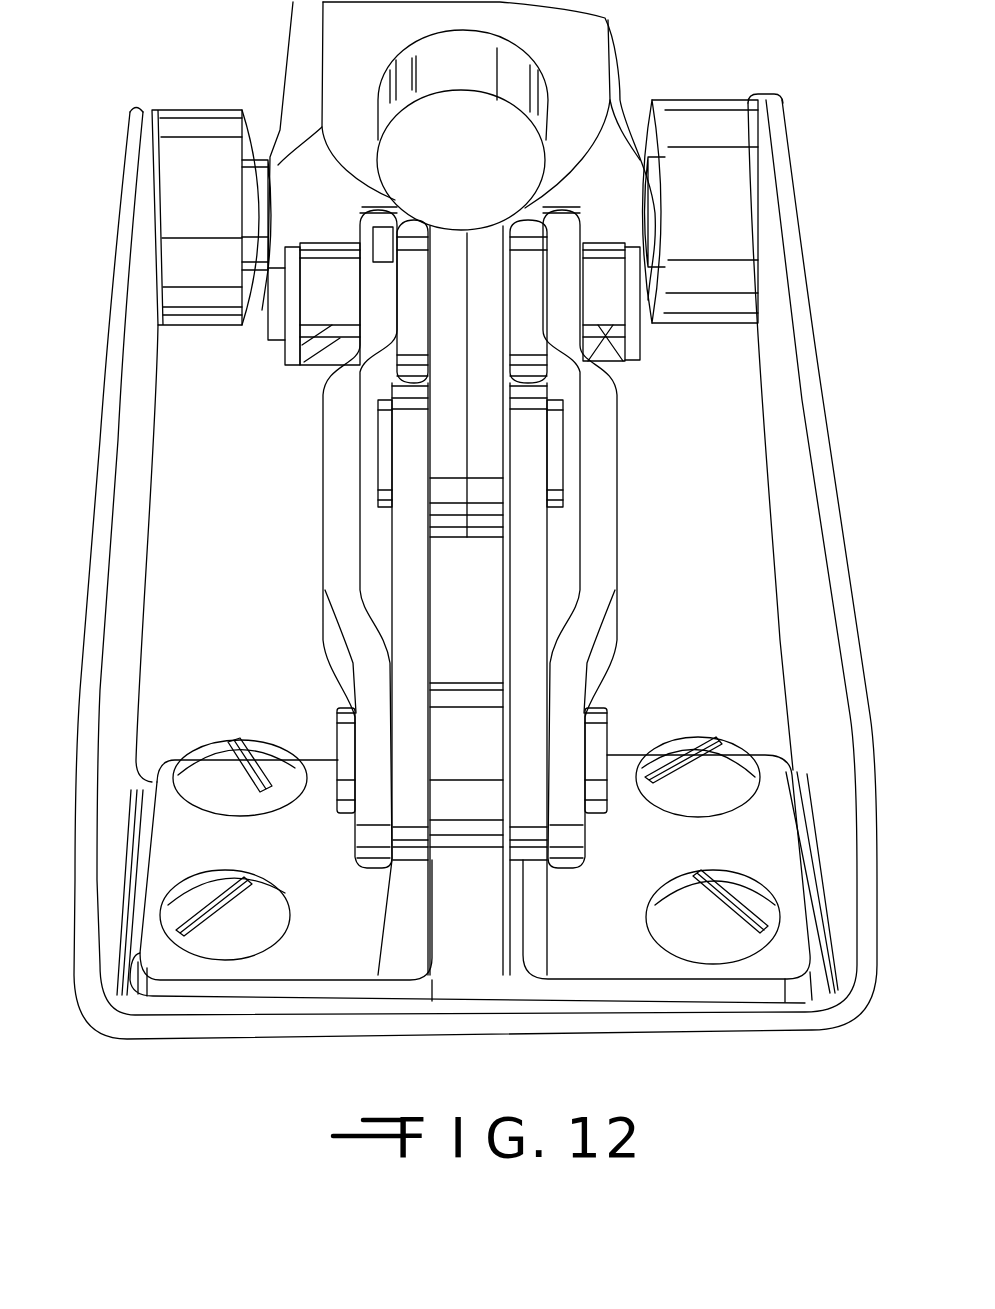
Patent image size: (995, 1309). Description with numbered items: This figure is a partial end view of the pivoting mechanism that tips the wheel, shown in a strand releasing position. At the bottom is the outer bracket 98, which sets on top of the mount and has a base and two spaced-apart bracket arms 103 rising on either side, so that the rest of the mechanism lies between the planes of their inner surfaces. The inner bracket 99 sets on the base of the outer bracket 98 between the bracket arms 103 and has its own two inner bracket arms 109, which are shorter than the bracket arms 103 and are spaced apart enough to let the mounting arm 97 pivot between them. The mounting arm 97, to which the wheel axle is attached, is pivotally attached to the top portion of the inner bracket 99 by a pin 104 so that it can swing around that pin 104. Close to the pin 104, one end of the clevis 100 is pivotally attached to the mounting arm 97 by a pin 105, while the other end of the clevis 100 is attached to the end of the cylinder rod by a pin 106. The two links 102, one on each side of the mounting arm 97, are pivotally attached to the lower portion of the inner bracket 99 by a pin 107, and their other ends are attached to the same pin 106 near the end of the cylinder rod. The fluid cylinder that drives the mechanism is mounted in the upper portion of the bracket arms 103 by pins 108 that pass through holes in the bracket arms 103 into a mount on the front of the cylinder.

The mounting arm 97 is at (490, 283).
The outer bracket 98 is at (490, 988).
The inner bracket 99 is at (333, 943).
The clevis 100 is at (527, 236).
The links 102 is at (337, 447).
The bracket arms 103 is at (108, 405).
The pin 104 is at (557, 440).
The pin 105 is at (382, 295).
The pin 106 is at (615, 290).
The pin 107 is at (612, 730).
The pins 108 is at (268, 153).
The inner bracket arms 109 is at (403, 547).